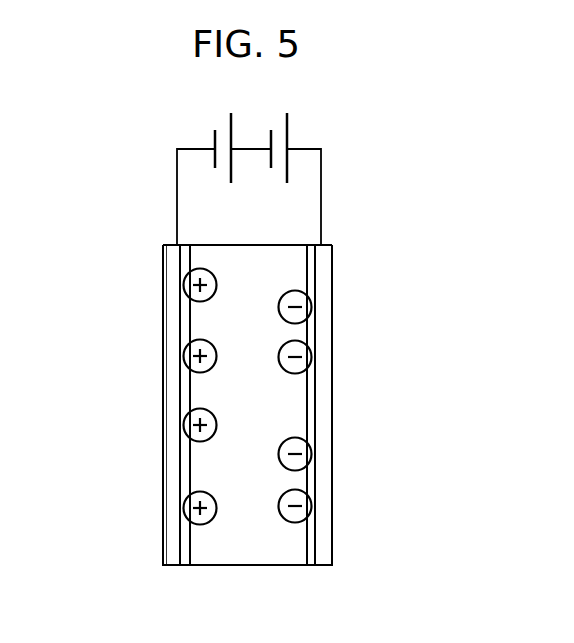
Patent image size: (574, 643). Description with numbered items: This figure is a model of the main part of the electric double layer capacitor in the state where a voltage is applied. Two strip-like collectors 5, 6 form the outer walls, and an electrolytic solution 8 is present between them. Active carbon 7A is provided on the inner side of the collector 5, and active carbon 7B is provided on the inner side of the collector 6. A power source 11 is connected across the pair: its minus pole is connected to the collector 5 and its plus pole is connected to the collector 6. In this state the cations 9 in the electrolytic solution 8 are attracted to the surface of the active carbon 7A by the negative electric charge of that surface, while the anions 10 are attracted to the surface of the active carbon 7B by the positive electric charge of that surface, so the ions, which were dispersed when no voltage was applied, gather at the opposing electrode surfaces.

The collector 5 is at (172, 538).
The collector 6 is at (325, 518).
The active carbon 7A is at (190, 260).
The active carbon 7B is at (308, 267).
The electrolytic solution 8 is at (298, 390).
The cations 9 is at (190, 348).
The anions 10 is at (305, 442).
The power source 11 is at (305, 132).